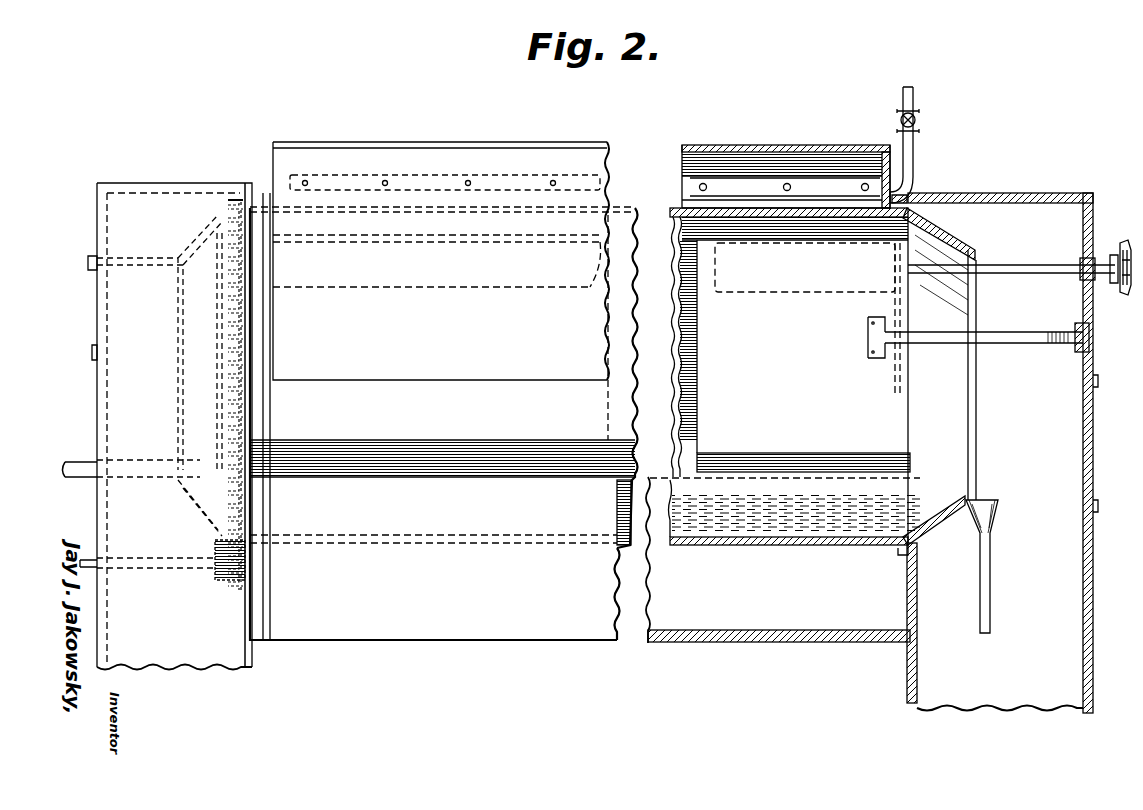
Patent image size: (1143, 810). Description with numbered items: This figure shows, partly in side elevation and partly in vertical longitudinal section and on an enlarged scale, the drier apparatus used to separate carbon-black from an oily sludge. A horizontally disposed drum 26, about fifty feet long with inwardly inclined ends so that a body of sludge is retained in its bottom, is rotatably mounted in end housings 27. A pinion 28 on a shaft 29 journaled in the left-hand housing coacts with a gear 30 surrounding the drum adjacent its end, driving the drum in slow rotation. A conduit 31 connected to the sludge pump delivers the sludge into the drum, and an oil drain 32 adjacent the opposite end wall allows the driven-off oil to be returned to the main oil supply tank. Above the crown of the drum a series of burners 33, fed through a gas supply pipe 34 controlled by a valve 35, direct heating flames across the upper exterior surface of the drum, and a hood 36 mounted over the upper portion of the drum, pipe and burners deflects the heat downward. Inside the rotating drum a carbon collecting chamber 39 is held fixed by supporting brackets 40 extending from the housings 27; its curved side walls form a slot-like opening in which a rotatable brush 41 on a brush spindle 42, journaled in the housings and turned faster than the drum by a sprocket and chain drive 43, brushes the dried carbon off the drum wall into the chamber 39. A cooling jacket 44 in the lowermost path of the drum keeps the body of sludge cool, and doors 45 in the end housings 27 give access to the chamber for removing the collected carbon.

The drum 26 is at (415, 410).
The end housings 27 is at (141, 196).
The pinion 28 is at (222, 582).
The shaft 29 is at (150, 560).
The gear 30 is at (235, 197).
The conduit 31 is at (80, 462).
The oil drain 32 is at (990, 591).
The burners 33 is at (465, 178).
The gas supply pipe 34 is at (748, 185).
The valve 35 is at (920, 121).
The hood 36 is at (544, 152).
The carbon collecting chamber 39 is at (790, 342).
The supporting brackets 40 is at (1008, 335).
The rotatable brush 41 is at (515, 280).
The brush spindle 42 is at (90, 262).
The sprocket and chain drive 43 is at (1120, 248).
The cooling jacket 44 is at (785, 612).
The doors 45 is at (1083, 422).